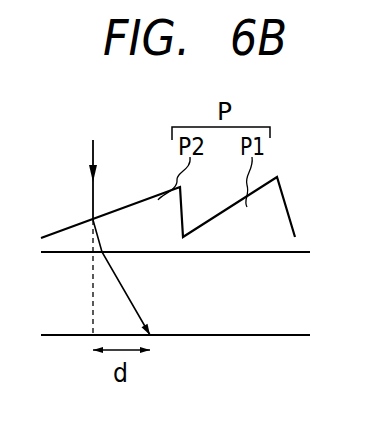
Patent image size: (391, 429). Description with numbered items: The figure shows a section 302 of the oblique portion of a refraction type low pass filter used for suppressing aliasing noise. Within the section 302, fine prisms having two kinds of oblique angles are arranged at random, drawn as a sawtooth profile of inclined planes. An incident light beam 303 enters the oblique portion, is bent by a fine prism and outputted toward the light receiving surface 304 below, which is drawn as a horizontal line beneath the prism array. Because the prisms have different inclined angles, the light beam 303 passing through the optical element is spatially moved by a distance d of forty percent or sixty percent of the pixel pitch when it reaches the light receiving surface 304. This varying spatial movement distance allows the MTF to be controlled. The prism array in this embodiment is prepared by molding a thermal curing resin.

The section of oblique portion 302 is at (290, 208).
The incident light beam 303 is at (92, 153).
The light receiving surface 304 is at (260, 336).